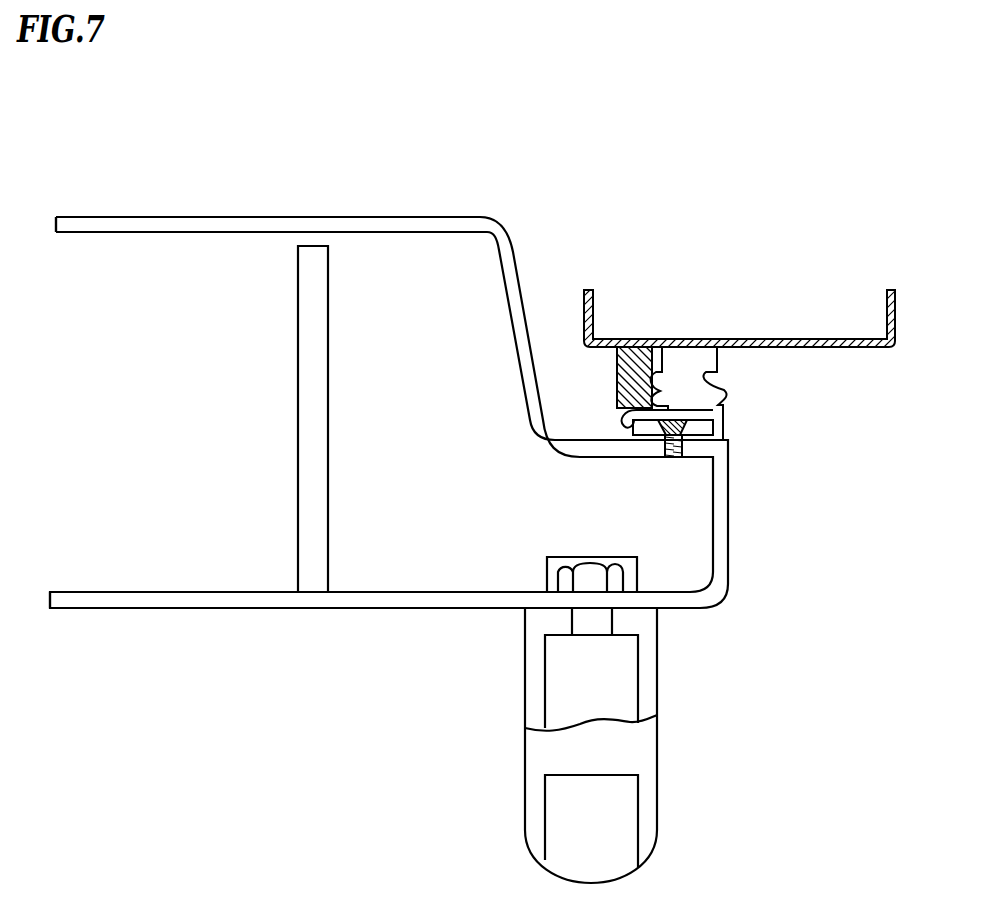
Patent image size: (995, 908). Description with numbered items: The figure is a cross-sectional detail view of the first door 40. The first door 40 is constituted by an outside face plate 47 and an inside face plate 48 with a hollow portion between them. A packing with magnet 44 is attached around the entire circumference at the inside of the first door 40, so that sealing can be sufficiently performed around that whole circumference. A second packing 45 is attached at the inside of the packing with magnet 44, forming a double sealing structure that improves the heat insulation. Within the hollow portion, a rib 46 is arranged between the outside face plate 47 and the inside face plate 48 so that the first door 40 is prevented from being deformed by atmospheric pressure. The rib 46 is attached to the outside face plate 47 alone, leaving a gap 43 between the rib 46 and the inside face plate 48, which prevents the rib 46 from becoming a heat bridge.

The first door 40 is at (192, 610).
The gap 43 is at (293, 237).
The packing with magnet 44 is at (705, 362).
The second packing 45 is at (618, 378).
The rib 46 is at (322, 508).
The outside face plate 47 is at (280, 600).
The inside face plate 48 is at (393, 223).